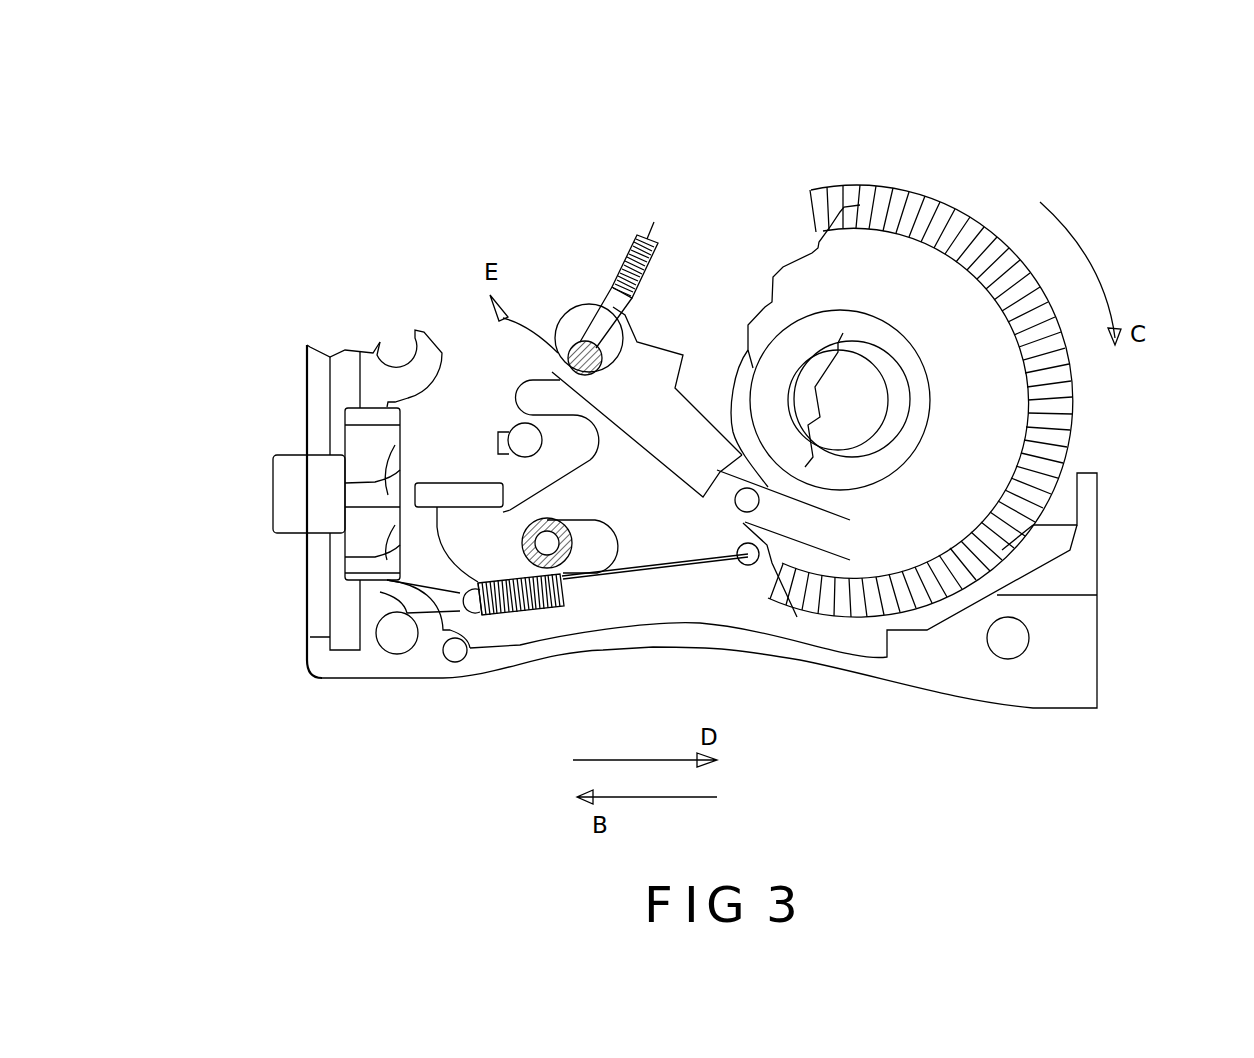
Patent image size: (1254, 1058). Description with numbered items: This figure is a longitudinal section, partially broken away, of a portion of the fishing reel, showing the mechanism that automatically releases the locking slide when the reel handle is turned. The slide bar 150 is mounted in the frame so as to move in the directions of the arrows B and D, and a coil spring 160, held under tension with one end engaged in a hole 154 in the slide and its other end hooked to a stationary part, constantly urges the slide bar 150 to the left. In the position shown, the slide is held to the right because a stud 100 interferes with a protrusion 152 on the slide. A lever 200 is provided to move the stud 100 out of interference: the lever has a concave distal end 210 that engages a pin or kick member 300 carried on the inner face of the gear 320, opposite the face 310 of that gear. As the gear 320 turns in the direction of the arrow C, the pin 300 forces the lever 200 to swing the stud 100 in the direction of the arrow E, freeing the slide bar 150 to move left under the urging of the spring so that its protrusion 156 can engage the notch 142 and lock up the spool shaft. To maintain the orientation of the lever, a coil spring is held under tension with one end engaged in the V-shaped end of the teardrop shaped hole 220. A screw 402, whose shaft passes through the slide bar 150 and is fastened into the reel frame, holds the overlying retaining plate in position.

The stud 100 is at (587, 307).
The notch 142 is at (378, 490).
The slide bar 150 is at (648, 503).
The protrusion 152 is at (640, 338).
The hole 154 is at (772, 560).
The protrusion 156 is at (462, 493).
The coil spring 160 is at (647, 580).
The lever 200 is at (700, 410).
The concave distal end 210 is at (648, 236).
The teardrop shaped hole 220 is at (590, 308).
The pin 300 is at (752, 505).
The face 310 is at (985, 342).
The gear 320 is at (1075, 415).
The screw 402 is at (468, 640).